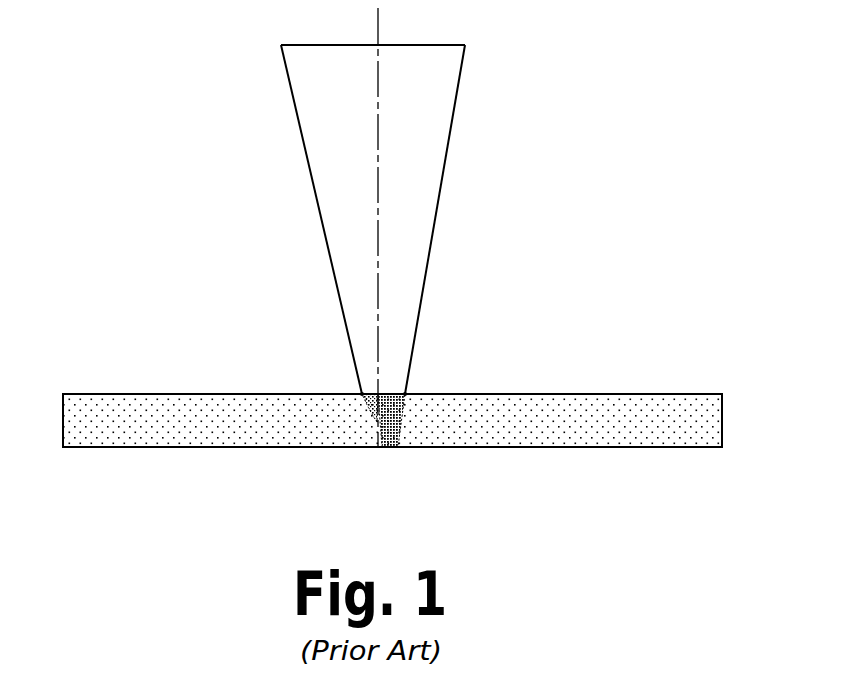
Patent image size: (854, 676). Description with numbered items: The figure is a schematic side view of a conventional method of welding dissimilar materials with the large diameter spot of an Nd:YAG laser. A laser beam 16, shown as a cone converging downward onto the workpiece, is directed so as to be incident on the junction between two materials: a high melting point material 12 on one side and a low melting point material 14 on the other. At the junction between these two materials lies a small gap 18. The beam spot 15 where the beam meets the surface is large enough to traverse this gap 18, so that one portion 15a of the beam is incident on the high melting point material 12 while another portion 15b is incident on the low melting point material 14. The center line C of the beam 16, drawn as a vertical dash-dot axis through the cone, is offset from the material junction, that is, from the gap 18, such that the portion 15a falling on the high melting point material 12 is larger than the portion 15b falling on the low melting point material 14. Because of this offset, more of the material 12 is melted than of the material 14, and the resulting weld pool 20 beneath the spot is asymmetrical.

The high melting point material 12 is at (115, 393).
The low melting point material 14 is at (667, 393).
The beam spot 15 is at (373, 393).
The portion of the beam incident on the high melting point material 15a is at (360, 393).
The portion of the beam incident on the low melting point material 15b is at (402, 393).
The laser beam 16 is at (446, 137).
The gap 18 is at (392, 448).
The weld pool 20 is at (377, 420).
The center line of the beam C is at (377, 38).